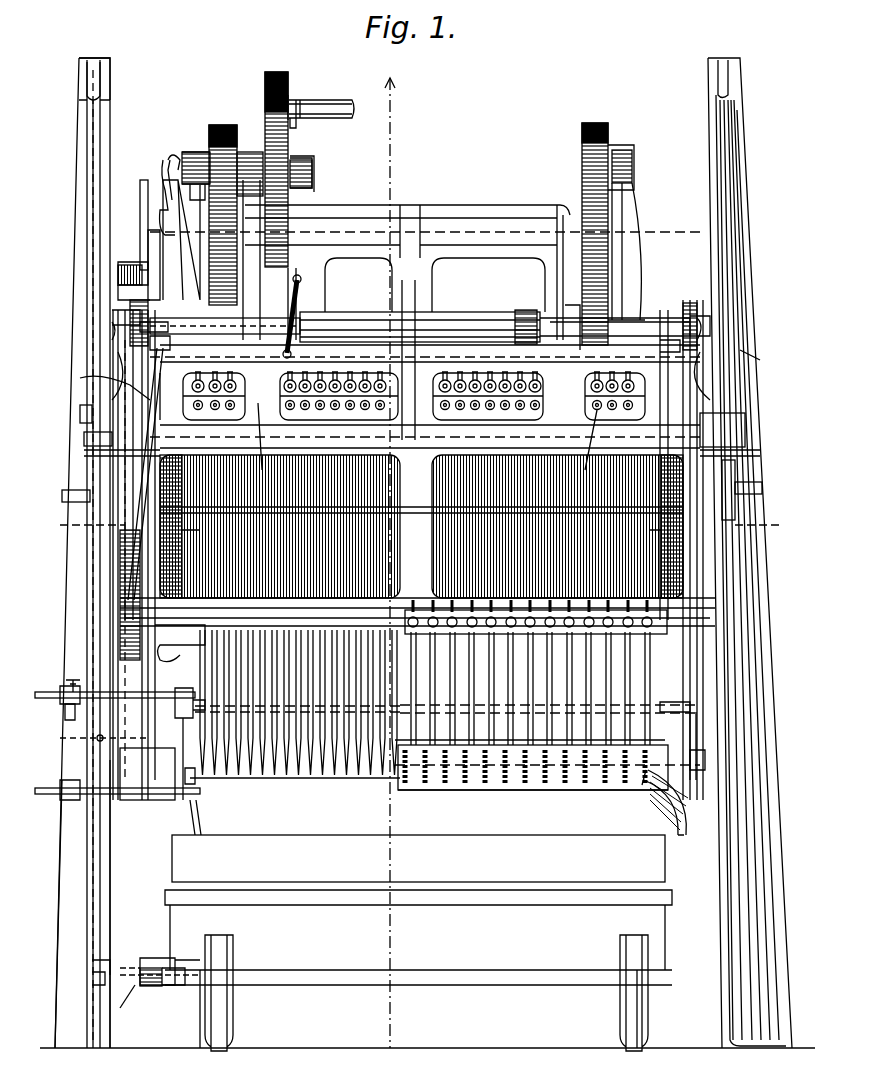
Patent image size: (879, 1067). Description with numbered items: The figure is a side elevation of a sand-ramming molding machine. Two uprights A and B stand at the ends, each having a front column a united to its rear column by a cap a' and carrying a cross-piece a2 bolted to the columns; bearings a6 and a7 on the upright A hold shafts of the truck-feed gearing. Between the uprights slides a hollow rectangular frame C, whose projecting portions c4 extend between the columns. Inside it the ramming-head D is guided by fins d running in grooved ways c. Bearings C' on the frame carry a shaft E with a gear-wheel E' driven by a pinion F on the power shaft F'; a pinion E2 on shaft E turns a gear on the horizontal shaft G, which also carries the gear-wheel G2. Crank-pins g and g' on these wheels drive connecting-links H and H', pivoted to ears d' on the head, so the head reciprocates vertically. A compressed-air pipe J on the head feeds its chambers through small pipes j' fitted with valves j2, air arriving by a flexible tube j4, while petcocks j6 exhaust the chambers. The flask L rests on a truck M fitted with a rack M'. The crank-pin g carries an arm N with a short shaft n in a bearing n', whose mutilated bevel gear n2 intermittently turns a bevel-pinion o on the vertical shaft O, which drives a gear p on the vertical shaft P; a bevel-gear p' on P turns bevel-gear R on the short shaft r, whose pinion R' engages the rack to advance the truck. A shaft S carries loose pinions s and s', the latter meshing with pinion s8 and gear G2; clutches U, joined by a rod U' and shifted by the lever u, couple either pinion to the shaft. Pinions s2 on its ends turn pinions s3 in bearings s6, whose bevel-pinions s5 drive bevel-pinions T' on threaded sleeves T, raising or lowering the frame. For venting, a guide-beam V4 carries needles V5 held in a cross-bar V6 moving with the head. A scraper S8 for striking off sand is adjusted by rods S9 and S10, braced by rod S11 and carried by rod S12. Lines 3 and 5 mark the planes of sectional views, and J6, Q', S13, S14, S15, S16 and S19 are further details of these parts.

The upright or support A is at (85, 1033).
The upright or support B is at (750, 553).
The front leg or column a is at (379, 904).
The cap a' is at (418, 79).
The cross-piece a2 is at (406, 490).
The bearing a6 is at (96, 962).
The bearing a7 is at (133, 999).
The box-like frame C is at (417, 426).
The bearings C' is at (286, 160).
The grooved guides or ways c is at (421, 539).
The projecting portion c4 is at (84, 438).
The ramming-head D is at (421, 526).
The fins d is at (421, 526).
The ears d' is at (425, 305).
The shaft E is at (315, 174).
The gear-wheel E' is at (262, 167).
The pinion E2 is at (205, 152).
The pinion F is at (321, 93).
The shaft F' is at (323, 100).
The horizontal shaft G is at (228, 126).
The gear-wheel G2 is at (582, 160).
The crank-pin g is at (163, 169).
The crank-pin g' is at (634, 167).
The connecting-link H is at (181, 240).
The connecting-link H' is at (635, 251).
The compressed-air pipe J is at (458, 372).
The small pipe j' is at (403, 376).
The valve j2 is at (406, 393).
The flexible tube j4 is at (262, 470).
The petcock or exhaust-valve j6 is at (590, 443).
The roller support J6 is at (470, 410).
The molder's flask L is at (418, 858).
The truck M is at (418, 969).
The rack M' is at (164, 948).
The arm N is at (162, 172).
The short shaft n is at (132, 225).
The bearing n' is at (161, 265).
The mutilated bevel gear-wheel n2 is at (131, 260).
The bevel-pinion o is at (118, 272).
The vertical shaft O is at (118, 303).
The vertical shaft P is at (112, 325).
The gear-wheel p is at (69, 413).
The bevel-gear p' is at (81, 981).
The lever Q' is at (105, 386).
The bevel-gear R is at (365, 993).
The pinion R' is at (173, 992).
The short shaft r is at (140, 968).
The shaft S is at (417, 559).
The pinion s is at (225, 313).
The pinion s' is at (528, 324).
The pinion s2 is at (416, 318).
The pinion s3 is at (413, 351).
The bevel-pinion s5 is at (112, 332).
The bearings s6 is at (118, 380).
The pinion s8 is at (572, 315).
The scraper S8 is at (650, 795).
The rod S9 is at (696, 728).
The rod S10 is at (727, 700).
The rod S11 is at (364, 735).
The rod S12 is at (212, 796).
The clamp S13 is at (92, 800).
The pin S14 is at (105, 733).
The box S15 is at (120, 775).
The clamp S16 is at (72, 680).
The rod S19 is at (183, 738).
The threaded sleeve or nut T is at (410, 566).
The bevel-pinion T' is at (411, 463).
The clutches U is at (403, 316).
The rod U' is at (420, 314).
The handle or lever u is at (140, 690).
The cross guide-beam V4 is at (638, 754).
The wires or needles V5 is at (455, 612).
The cross-bar V6 is at (405, 616).
The section line 3 is at (396, 77).
The section line 5 is at (415, 528).